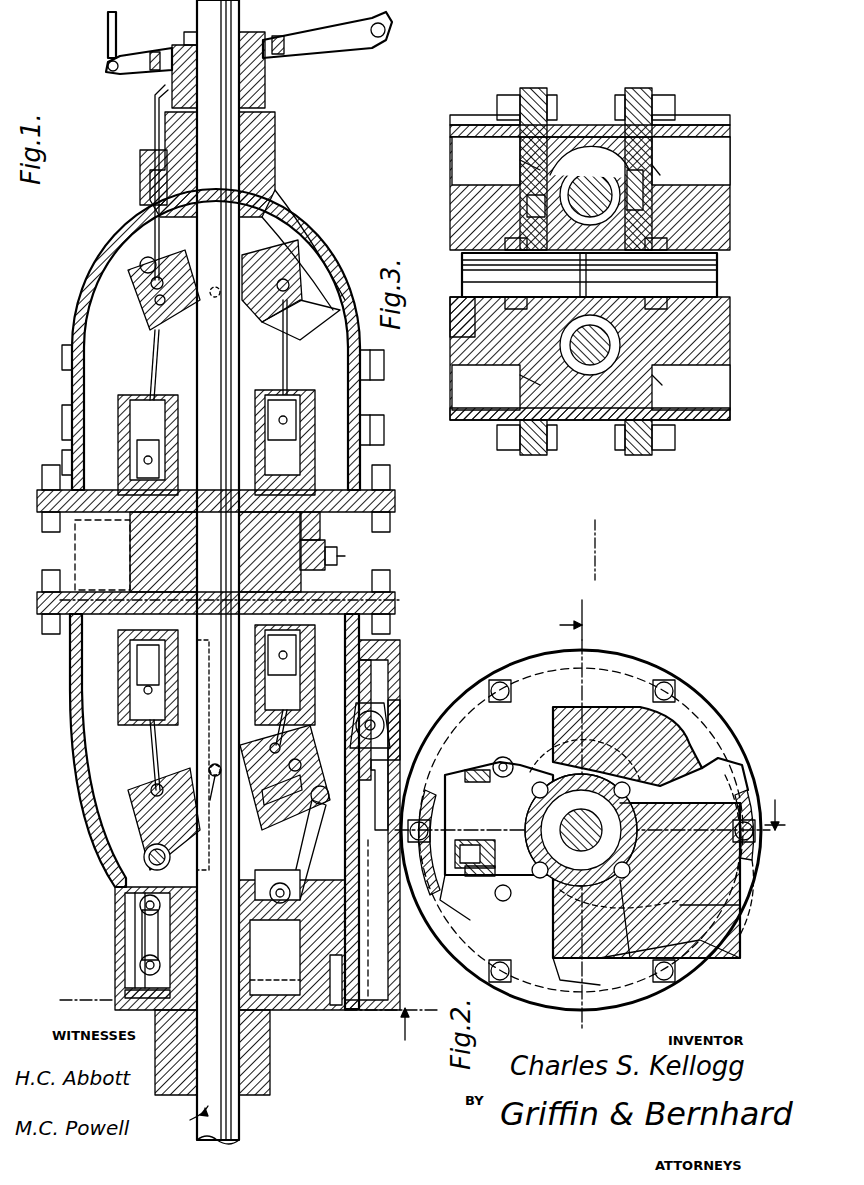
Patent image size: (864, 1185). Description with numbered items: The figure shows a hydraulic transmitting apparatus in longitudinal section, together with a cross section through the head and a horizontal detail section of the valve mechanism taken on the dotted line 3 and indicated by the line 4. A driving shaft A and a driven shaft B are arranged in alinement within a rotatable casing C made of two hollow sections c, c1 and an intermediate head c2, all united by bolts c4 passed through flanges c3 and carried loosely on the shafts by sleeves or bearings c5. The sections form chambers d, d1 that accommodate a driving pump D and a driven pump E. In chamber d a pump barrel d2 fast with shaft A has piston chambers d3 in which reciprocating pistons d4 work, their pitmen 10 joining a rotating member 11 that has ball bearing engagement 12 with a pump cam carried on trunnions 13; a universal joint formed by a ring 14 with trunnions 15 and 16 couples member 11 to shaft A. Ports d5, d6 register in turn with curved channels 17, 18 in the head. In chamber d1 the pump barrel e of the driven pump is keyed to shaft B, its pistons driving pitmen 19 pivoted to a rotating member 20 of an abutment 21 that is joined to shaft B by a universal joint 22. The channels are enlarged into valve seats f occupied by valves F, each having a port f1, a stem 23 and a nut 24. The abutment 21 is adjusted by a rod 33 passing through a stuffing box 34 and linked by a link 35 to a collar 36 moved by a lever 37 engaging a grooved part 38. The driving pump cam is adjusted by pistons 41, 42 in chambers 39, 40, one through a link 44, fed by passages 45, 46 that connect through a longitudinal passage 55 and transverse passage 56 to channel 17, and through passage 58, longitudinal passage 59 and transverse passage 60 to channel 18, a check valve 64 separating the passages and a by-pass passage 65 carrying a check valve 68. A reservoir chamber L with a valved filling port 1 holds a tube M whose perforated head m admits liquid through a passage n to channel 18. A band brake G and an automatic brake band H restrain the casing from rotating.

In FIG. 1, the driving shaft A is at (239, 1130).
In FIG. 3, the driving shaft A is at (700, 280).
In FIG. 2, the driving shaft A is at (560, 790).
In FIG. 1, the driven shaft B is at (275, 150).
In FIG. 3, the driven shaft B is at (462, 268).
In FIG. 1, the casing C is at (70, 700).
In FIG. 1, the driving pump D is at (128, 810).
In FIG. 1, the driven pump E is at (300, 400).
In FIG. 2, the driven pump E is at (657, 952).
In FIG. 3, the valve F is at (618, 170).
In FIG. 2, the valve F is at (561, 976).
In FIG. 1, the band brake G is at (384, 365).
In FIG. 3, the band brake G is at (497, 440).
In FIG. 1, the automatic brake band H is at (384, 430).
In FIG. 3, the automatic brake band H is at (610, 400).
In FIG. 2, the reservoir chamber L is at (500, 757).
In FIG. 2, the tube M is at (455, 855).
In FIG. 1, the hollow casing section c is at (70, 770).
In FIG. 3, the hollow casing section c is at (700, 125).
In FIG. 2, the hollow casing section c is at (582, 840).
In FIG. 3, the hollow casing section c1 is at (455, 125).
In FIG. 1, the head c2 is at (102, 555).
In FIG. 3, the head c2 is at (450, 315).
In FIG. 1, the flanges c3 is at (37, 500).
In FIG. 3, the flanges c3 is at (520, 90).
In FIG. 3, the bolts c4 is at (480, 115).
In FIG. 2, the bolts c4 is at (655, 690).
In FIG. 1, the sleeves or bearings c5 is at (305, 185).
In FIG. 3, the chamber d is at (720, 160).
In FIG. 2, the chamber d is at (610, 760).
In FIG. 3, the chamber d1 is at (458, 380).
In FIG. 2, the chamber d1 is at (462, 851).
In FIG. 3, the pump barrel d2 is at (720, 330).
In FIG. 1, the piston chambers d3 is at (135, 677).
In FIG. 1, the reciprocating pistons d4 is at (292, 675).
In FIG. 1, the ports d5 is at (230, 561).
In FIG. 2, the ports d5 is at (585, 720).
In FIG. 2, the ports d6 is at (650, 841).
In FIG. 1, the pump barrel e is at (130, 430).
In FIG. 3, the pump barrel e is at (478, 159).
In FIG. 3, the valve seats f is at (592, 175).
In FIG. 3, the valve port f1 is at (568, 165).
In FIG. 2, the perforated valve or head m is at (451, 832).
In FIG. 2, the passage n is at (471, 900).
In FIG. 1, the valved filling port 1 is at (395, 1035).
In FIG. 2, the valved filling port 1 is at (775, 834).
In FIG. 3, the section line 3 is at (585, 550).
In FIG. 2, the section line 3 is at (574, 806).
In FIG. 1, the section line 4 is at (67, 1004).
In FIG. 2, the section line 4 is at (405, 989).
In FIG. 1, the pitmen 10 is at (282, 725).
In FIG. 1, the rotating member 11 is at (310, 860).
In FIG. 1, the ball bearing engagement 12 is at (285, 787).
In FIG. 1, the trunnions 13 is at (267, 807).
In FIG. 1, the ring 14 is at (205, 755).
In FIG. 1, the trunnions 15 is at (155, 750).
In FIG. 1, the trunnions 16 is at (207, 794).
In FIG. 3, the channel 17 is at (588, 155).
In FIG. 3, the channel 18 is at (583, 383).
In FIG. 2, the channel 18 is at (630, 958).
In FIG. 1, the pitmen 19 is at (280, 350).
In FIG. 1, the rotating member 20 is at (320, 315).
In FIG. 1, the cam or abutment 21 is at (298, 270).
In FIG. 1, the universal joint 22 is at (180, 295).
In FIG. 1, the valve stem 23 is at (325, 555).
In FIG. 1, the nut 24 is at (340, 550).
In FIG. 1, the rod 33 is at (155, 200).
In FIG. 1, the stuffing box 34 is at (140, 170).
In FIG. 1, the link 35 is at (152, 283).
In FIG. 1, the collar 36 is at (262, 78).
In FIG. 1, the lever 37 is at (320, 40).
In FIG. 1, the grooved part 38 is at (175, 50).
In FIG. 1, the piston chamber 39 is at (275, 957).
In FIG. 1, the piston chamber 40 is at (125, 900).
In FIG. 1, the piston 41 is at (300, 905).
In FIG. 1, the piston 42 is at (140, 965).
In FIG. 1, the link 44 is at (140, 895).
In FIG. 1, the passage 45 is at (336, 1005).
In FIG. 1, the passage 46 is at (120, 935).
In FIG. 1, the longitudinal passage 55 is at (400, 680).
In FIG. 2, the longitudinal passage 55 is at (752, 790).
In FIG. 1, the transverse passage 56 is at (320, 525).
In FIG. 3, the transverse passage 56 is at (665, 110).
In FIG. 2, the transverse passage 56 is at (725, 765).
In FIG. 1, the passage 58 is at (270, 1055).
In FIG. 1, the longitudinal passage 59 is at (380, 1010).
In FIG. 2, the longitudinal passage 59 is at (745, 900).
In FIG. 3, the transverse passage 60 is at (665, 455).
In FIG. 2, the transverse passage 60 is at (640, 950).
In FIG. 1, the check valve 64 is at (400, 660).
In FIG. 2, the check valve 64 is at (423, 628).
In FIG. 1, the by-pass passage 65 is at (400, 900).
In FIG. 2, the by-pass passage 65 is at (418, 913).
In FIG. 1, the check valve 68 is at (386, 722).
In FIG. 2, the check valve 68 is at (413, 708).